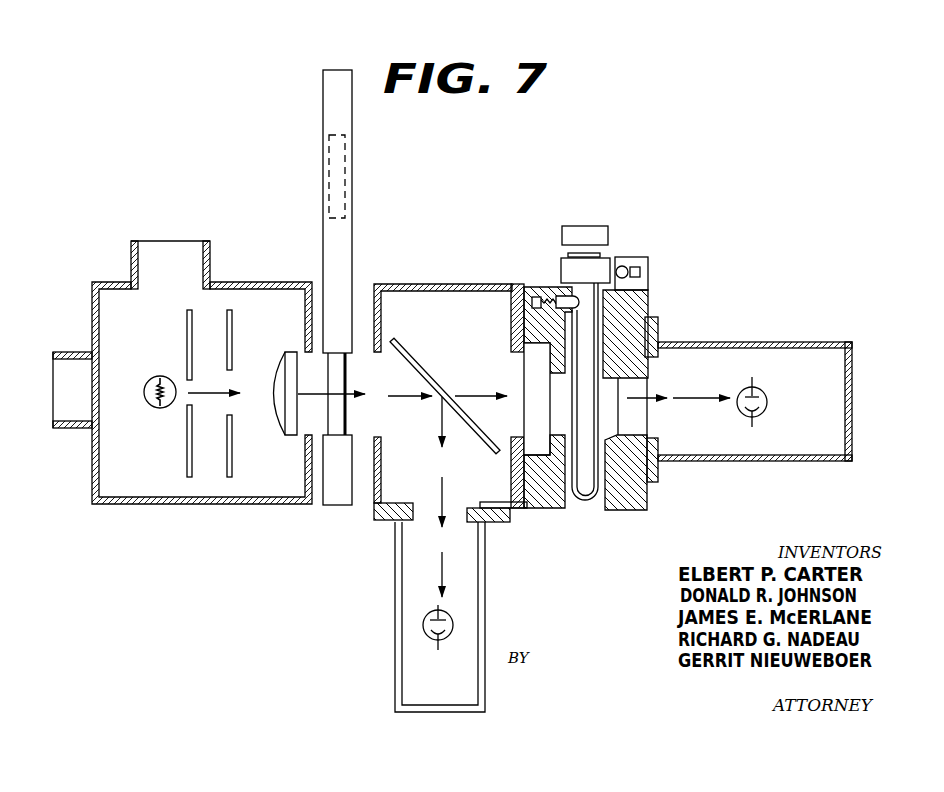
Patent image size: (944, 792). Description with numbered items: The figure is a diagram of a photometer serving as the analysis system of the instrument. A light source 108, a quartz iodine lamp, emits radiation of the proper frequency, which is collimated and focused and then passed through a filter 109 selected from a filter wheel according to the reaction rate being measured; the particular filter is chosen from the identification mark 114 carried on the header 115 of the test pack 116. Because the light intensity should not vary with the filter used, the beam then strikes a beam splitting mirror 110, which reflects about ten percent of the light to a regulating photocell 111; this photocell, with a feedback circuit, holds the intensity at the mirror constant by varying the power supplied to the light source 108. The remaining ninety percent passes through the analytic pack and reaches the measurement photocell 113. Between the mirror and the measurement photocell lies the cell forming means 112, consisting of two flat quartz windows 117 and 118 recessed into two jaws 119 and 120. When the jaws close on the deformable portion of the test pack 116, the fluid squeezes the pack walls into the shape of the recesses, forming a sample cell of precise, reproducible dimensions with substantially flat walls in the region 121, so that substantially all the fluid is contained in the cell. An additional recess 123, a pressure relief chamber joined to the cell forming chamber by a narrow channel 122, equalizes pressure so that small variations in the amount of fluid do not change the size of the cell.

The light source 108 is at (158, 377).
The filter 109 is at (347, 427).
The beam splitting mirror 110 is at (415, 362).
The regulating photocell 111 is at (455, 620).
The cell forming means 112 is at (617, 510).
The measurement photocell 113 is at (768, 398).
The identification mark 114 is at (600, 255).
The header 115 is at (567, 270).
The test pack 116 is at (592, 313).
The flat quartz window 117 is at (637, 432).
The flat quartz window 118 is at (530, 377).
The jaw 119 is at (650, 495).
The jaw 120 is at (538, 512).
The region 121 is at (556, 400).
The cap 122 is at (600, 233).
The recess 123 is at (647, 328).